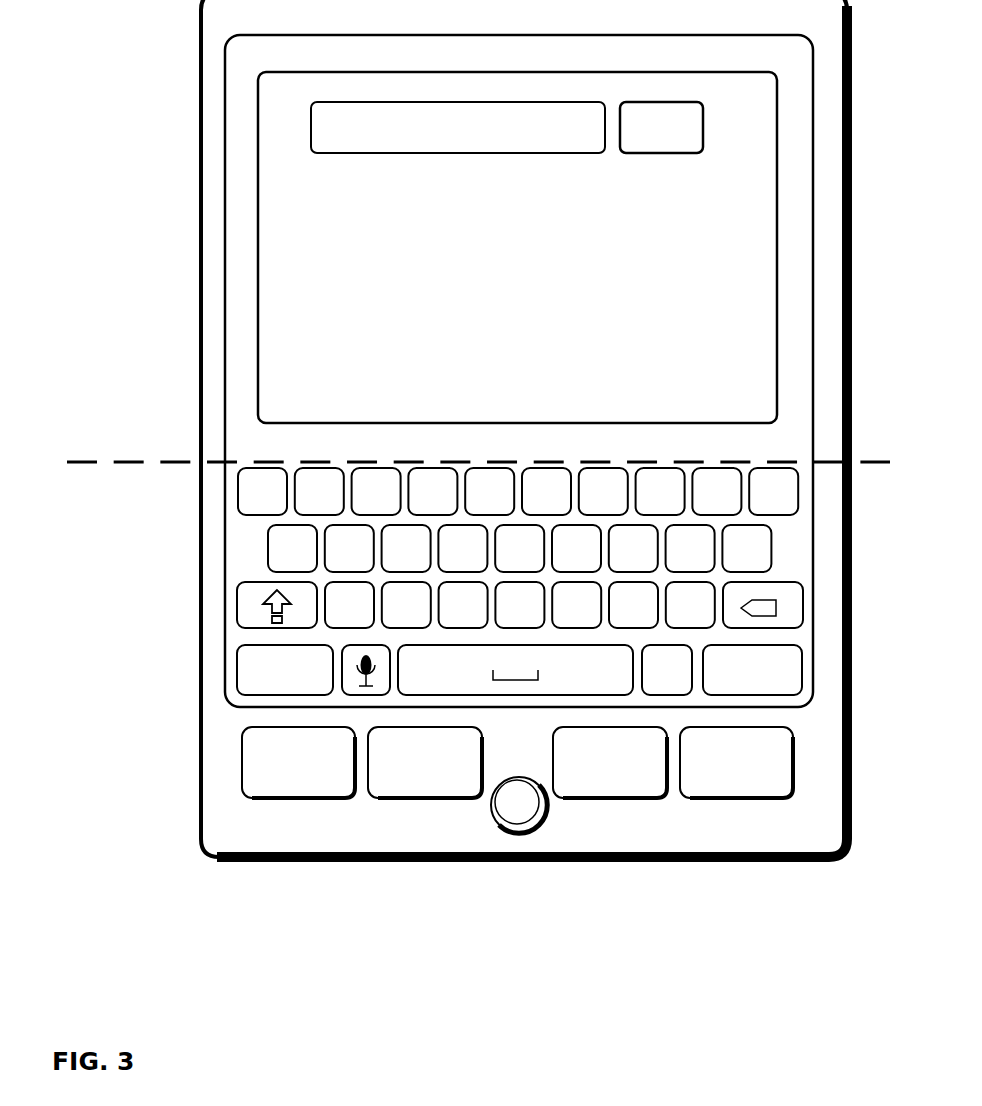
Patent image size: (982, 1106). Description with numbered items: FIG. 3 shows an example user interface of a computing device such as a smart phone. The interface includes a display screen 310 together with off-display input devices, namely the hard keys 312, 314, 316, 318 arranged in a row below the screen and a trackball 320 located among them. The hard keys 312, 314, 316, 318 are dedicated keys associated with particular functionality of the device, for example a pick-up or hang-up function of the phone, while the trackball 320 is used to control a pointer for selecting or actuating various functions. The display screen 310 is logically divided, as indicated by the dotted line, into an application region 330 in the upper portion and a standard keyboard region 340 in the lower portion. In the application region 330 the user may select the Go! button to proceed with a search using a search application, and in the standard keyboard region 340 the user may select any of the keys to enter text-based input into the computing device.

The display screen 310 is at (140, 37).
The hard key 312 is at (277, 800).
The hard key 314 is at (415, 800).
The hard key 316 is at (608, 800).
The hard key 318 is at (738, 800).
The trackball 320 is at (513, 828).
The application region 330 is at (182, 37).
The standard keyboard region 340 is at (184, 467).